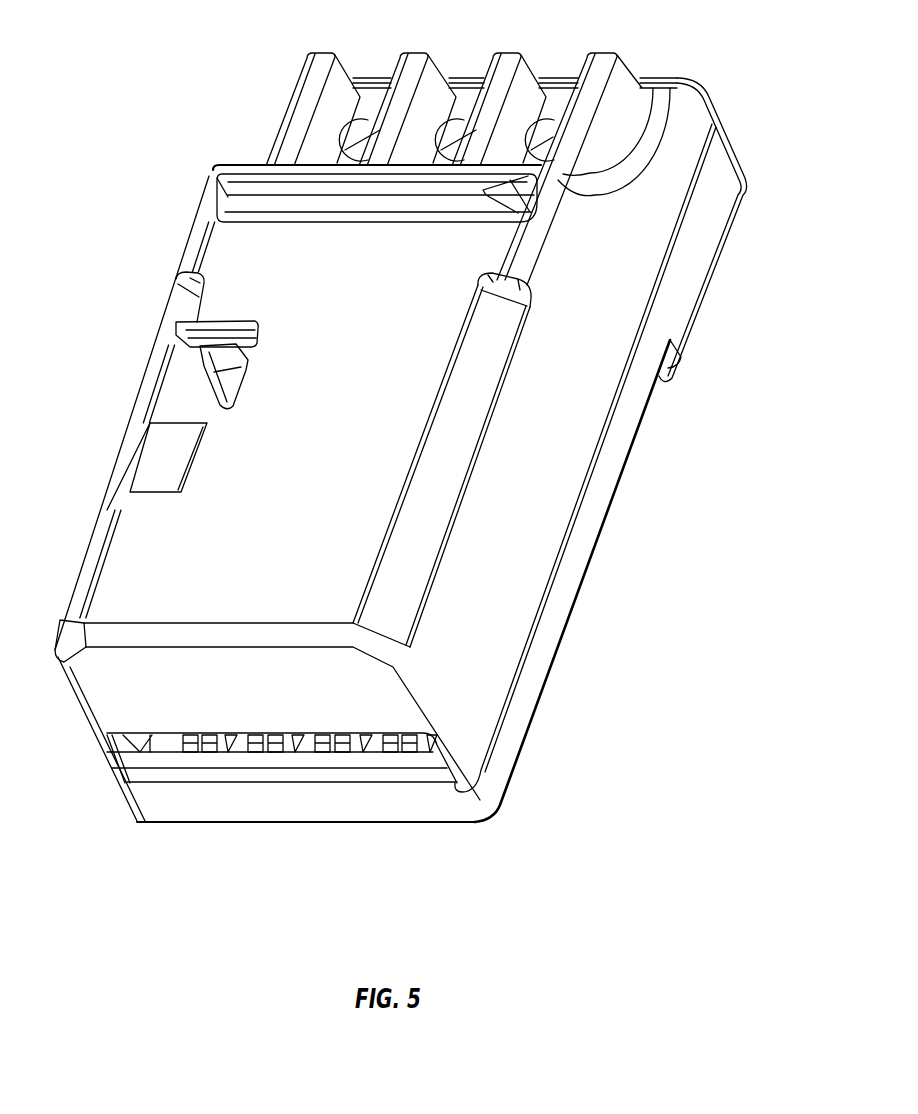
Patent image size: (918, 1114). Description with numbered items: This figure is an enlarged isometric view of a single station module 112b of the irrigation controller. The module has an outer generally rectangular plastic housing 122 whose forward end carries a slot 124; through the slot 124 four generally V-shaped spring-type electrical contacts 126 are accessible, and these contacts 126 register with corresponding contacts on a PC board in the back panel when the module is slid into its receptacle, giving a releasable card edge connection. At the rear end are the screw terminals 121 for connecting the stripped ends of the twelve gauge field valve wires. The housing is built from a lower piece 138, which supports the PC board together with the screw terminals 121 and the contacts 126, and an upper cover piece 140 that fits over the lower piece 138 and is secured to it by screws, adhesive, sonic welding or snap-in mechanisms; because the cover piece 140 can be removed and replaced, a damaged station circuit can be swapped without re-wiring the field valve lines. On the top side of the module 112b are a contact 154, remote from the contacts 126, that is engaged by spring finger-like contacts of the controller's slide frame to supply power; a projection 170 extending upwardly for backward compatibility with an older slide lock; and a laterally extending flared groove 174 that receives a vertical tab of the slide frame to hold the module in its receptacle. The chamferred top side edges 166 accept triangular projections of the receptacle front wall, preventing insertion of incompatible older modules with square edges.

The station module 112b is at (499, 827).
The screw terminals 121 is at (370, 127).
The housing 122 is at (565, 630).
The slot 124 is at (163, 738).
The electrical contacts 126 is at (193, 750).
The lower piece 138 is at (598, 490).
The upper cover piece 140 is at (697, 122).
The contact 154 is at (173, 470).
The chamferred top side edges 166 is at (93, 565).
The projection 170 is at (213, 373).
The flared groove 174 is at (253, 345).